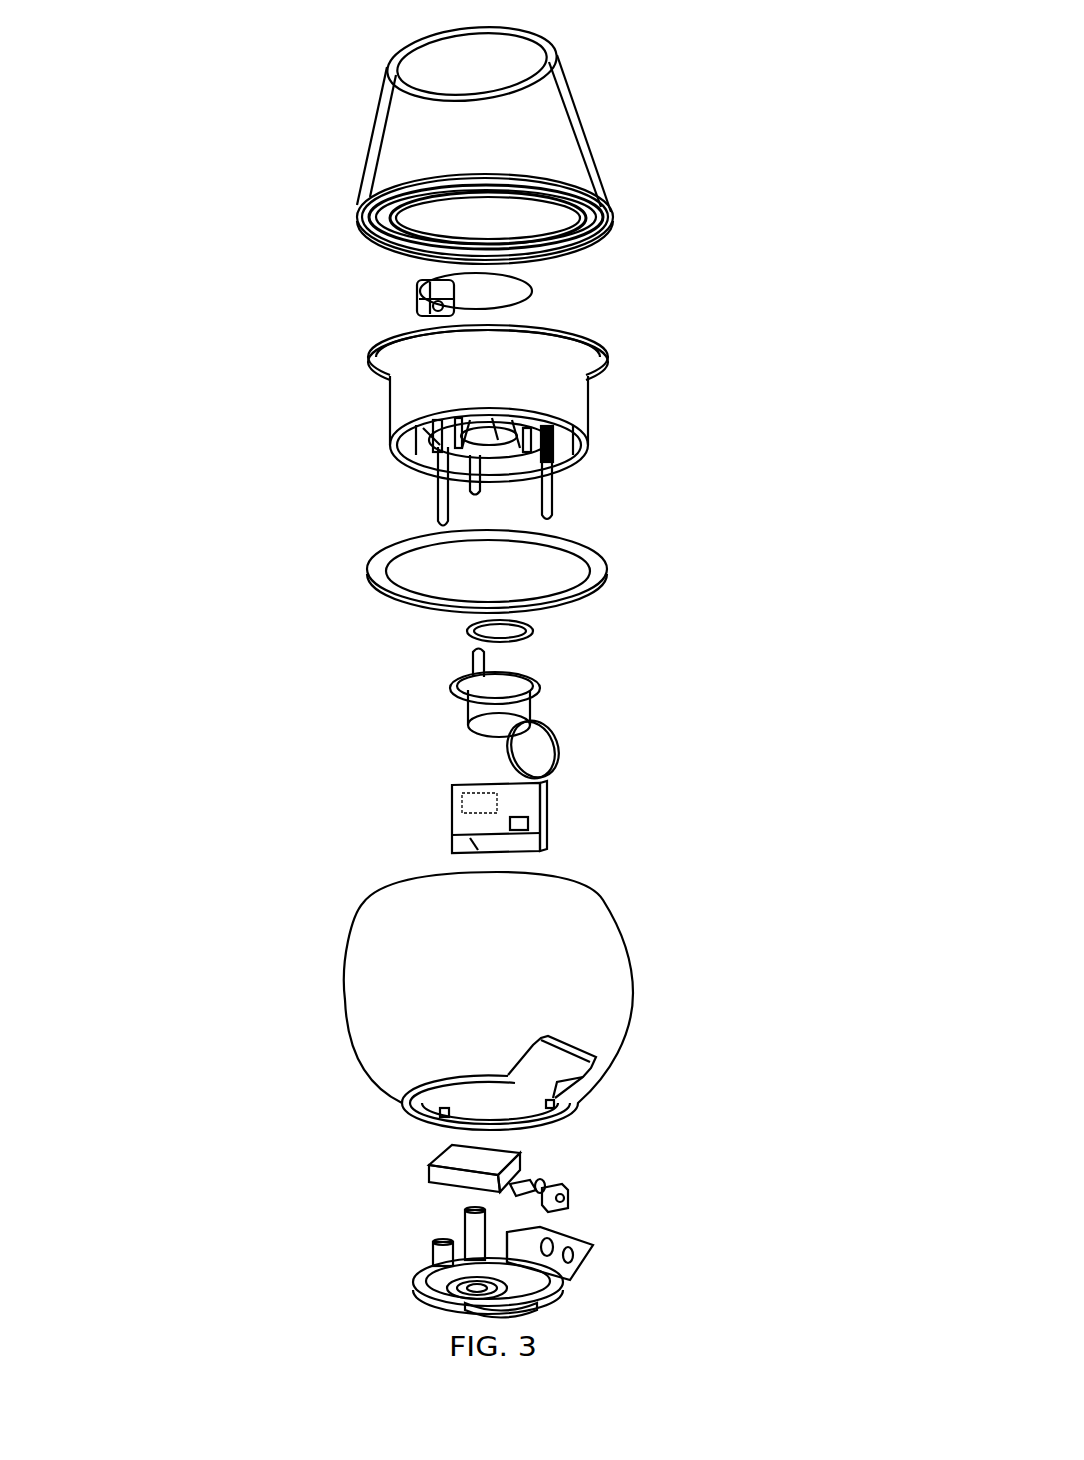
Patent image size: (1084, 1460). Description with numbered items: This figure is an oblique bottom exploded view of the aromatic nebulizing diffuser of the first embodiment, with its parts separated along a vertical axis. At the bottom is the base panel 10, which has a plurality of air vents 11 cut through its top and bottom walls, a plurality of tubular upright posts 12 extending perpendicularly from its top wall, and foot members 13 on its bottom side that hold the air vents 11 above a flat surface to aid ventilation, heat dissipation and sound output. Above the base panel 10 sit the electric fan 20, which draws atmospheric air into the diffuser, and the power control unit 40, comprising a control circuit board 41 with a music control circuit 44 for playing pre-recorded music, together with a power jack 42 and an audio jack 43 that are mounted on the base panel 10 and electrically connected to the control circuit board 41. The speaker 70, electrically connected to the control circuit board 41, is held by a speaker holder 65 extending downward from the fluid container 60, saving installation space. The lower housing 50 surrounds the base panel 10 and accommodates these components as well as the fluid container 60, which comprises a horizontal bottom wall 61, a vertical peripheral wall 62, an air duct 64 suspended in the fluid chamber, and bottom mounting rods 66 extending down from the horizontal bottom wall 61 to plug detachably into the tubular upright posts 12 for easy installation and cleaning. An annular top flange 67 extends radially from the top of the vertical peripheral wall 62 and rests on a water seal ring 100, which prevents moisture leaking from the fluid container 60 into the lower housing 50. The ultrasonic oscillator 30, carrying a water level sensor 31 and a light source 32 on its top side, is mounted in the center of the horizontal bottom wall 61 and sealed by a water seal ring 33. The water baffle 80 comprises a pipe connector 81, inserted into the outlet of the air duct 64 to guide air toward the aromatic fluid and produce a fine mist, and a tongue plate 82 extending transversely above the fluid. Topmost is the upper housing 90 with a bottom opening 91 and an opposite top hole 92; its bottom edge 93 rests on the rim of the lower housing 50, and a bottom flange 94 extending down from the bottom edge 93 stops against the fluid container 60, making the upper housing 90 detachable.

The base panel 10 is at (499, 1269).
The air vents 11 is at (470, 1288).
The tubular upright posts 12 is at (478, 1225).
The foot members 13 is at (418, 1283).
The electric fan 20 is at (430, 1153).
The ultrasonic oscillator 30 is at (462, 698).
The water level sensor 31 is at (480, 663).
The light source 32 is at (483, 668).
The water seal ring 33 is at (533, 630).
The power control unit 40 is at (510, 822).
The control circuit board 41 is at (532, 843).
The power jack 42 is at (570, 1203).
The audio jack 43 is at (527, 1182).
The music control circuit 44 is at (467, 802).
The lower housing 50 is at (337, 1002).
The fluid container 60 is at (488, 439).
The horizontal bottom wall 61 is at (403, 453).
The vertical peripheral wall 62 is at (560, 395).
The air duct 64 is at (437, 442).
The speaker holder 65 is at (587, 460).
The bottom mounting rods 66 is at (445, 510).
The annular top flange 67 is at (605, 356).
The speaker 70 is at (567, 748).
The water baffle 80 is at (510, 298).
The pipe connector 81 is at (418, 292).
The tongue plate 82 is at (500, 288).
The upper housing 90 is at (515, 138).
The opening 91 is at (513, 222).
The hole 92 is at (492, 58).
The bottom edge 93 is at (597, 220).
The bottom flange 94 is at (362, 232).
The water seal ring 100 is at (593, 568).